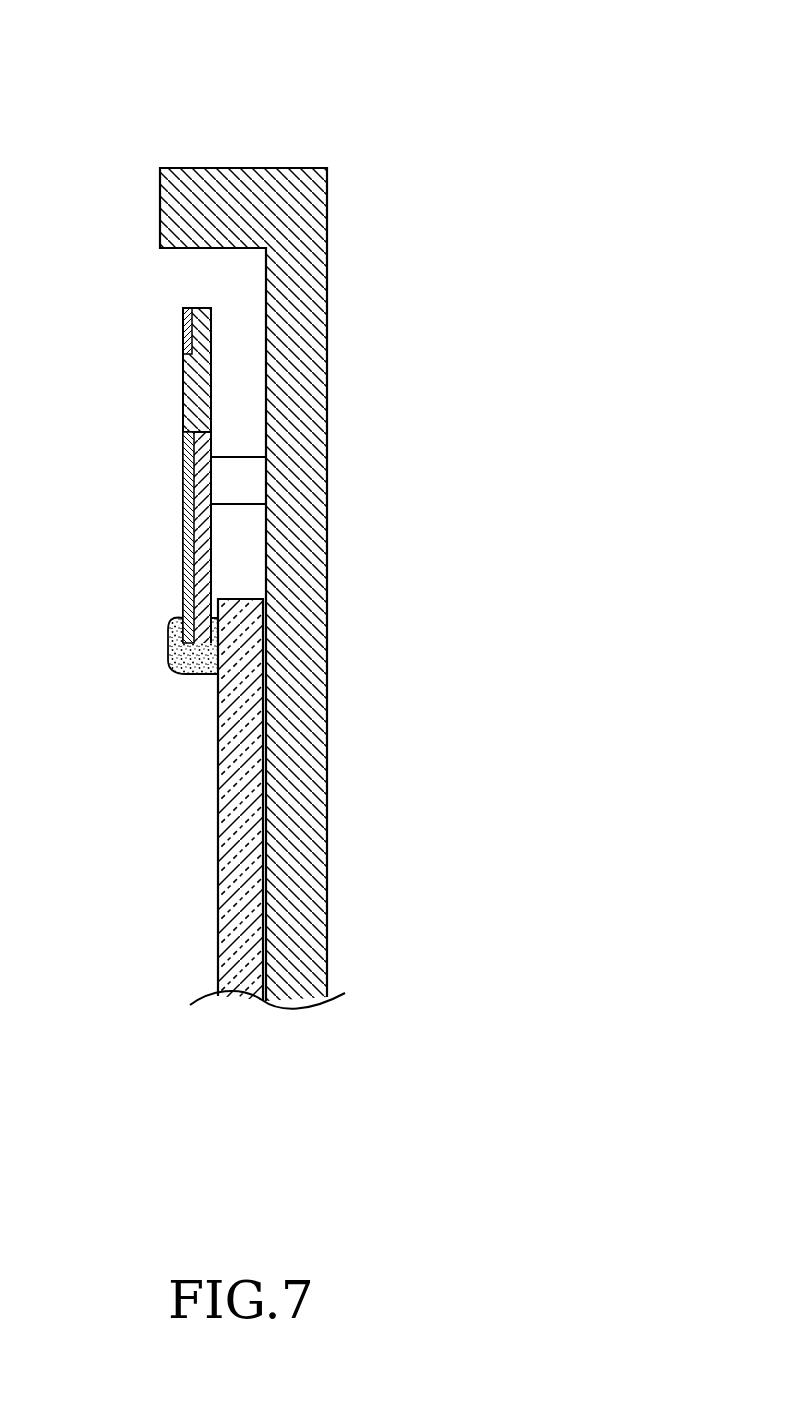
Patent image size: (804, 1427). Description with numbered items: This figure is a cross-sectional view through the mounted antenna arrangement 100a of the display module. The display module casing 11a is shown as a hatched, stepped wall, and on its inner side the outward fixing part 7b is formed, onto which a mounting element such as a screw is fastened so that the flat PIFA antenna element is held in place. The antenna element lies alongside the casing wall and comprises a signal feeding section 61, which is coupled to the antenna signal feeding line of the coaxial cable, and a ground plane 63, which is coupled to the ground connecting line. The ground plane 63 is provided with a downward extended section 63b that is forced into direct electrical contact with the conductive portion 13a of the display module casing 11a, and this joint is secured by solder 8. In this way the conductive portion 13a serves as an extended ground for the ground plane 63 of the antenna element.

The semiconductor device / module assembly 100a is at (368, 88).
The display module casing 11a is at (221, 172).
The conductive portion 13a is at (232, 813).
The signal feeding section 61 is at (183, 330).
The ground plane 63 is at (183, 540).
The downward extended section 63b is at (183, 592).
The solder 8 is at (168, 640).
The fixing part 7b is at (253, 483).